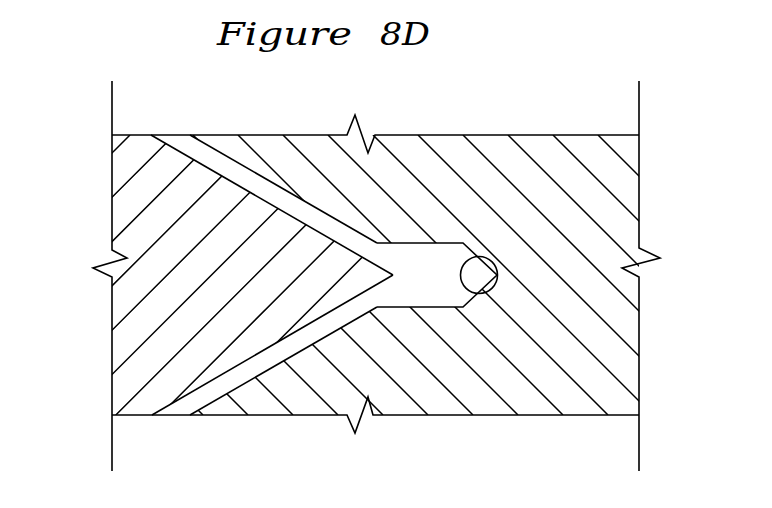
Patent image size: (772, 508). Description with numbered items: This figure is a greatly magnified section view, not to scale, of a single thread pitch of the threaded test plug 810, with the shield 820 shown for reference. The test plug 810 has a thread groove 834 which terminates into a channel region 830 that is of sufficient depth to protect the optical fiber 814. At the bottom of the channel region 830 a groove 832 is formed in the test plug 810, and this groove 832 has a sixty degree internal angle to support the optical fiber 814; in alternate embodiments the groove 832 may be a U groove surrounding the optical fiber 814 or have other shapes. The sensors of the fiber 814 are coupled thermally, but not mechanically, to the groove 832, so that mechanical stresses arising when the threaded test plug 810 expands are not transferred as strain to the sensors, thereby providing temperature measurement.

The test plug 810 is at (607, 162).
The shield 820 is at (142, 193).
The channel region 830 is at (417, 237).
The optical fiber 814 is at (487, 275).
The thread groove 834 is at (223, 148).
The groove 832 is at (507, 288).